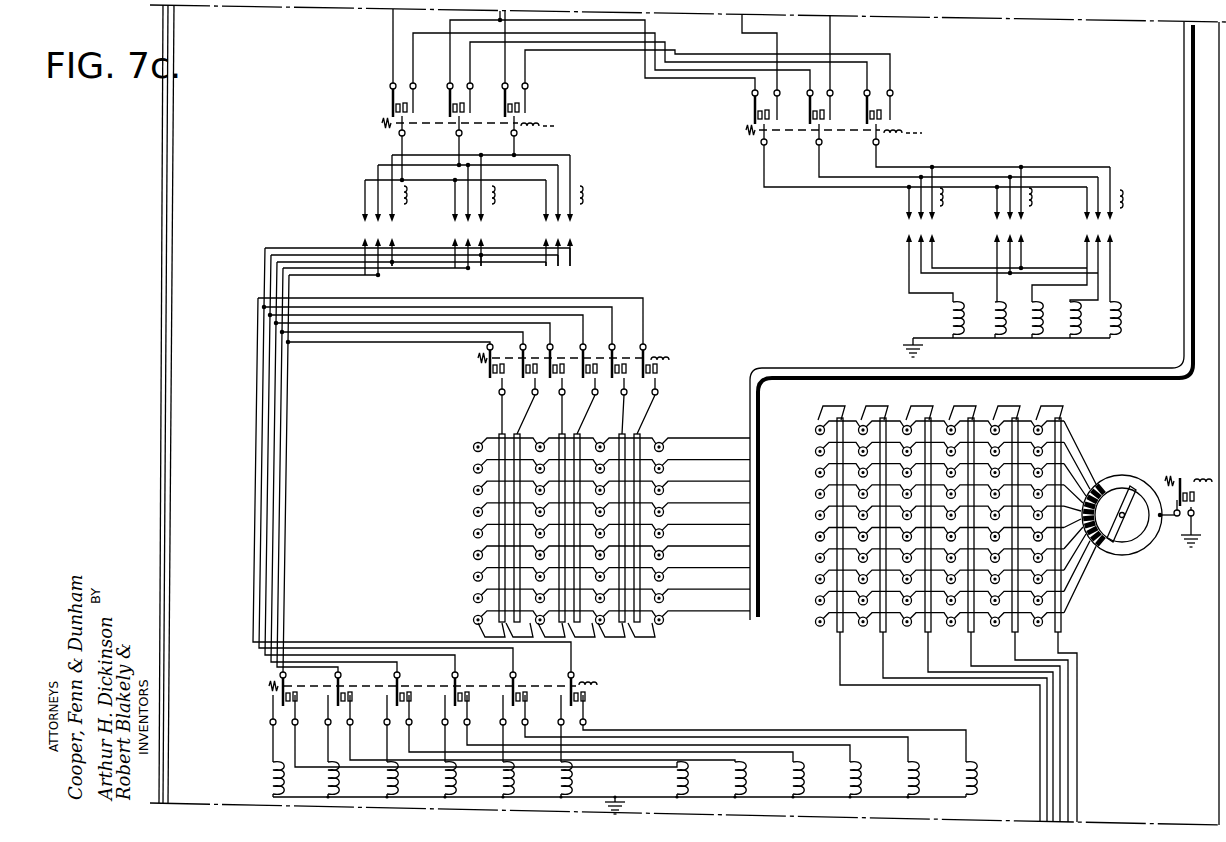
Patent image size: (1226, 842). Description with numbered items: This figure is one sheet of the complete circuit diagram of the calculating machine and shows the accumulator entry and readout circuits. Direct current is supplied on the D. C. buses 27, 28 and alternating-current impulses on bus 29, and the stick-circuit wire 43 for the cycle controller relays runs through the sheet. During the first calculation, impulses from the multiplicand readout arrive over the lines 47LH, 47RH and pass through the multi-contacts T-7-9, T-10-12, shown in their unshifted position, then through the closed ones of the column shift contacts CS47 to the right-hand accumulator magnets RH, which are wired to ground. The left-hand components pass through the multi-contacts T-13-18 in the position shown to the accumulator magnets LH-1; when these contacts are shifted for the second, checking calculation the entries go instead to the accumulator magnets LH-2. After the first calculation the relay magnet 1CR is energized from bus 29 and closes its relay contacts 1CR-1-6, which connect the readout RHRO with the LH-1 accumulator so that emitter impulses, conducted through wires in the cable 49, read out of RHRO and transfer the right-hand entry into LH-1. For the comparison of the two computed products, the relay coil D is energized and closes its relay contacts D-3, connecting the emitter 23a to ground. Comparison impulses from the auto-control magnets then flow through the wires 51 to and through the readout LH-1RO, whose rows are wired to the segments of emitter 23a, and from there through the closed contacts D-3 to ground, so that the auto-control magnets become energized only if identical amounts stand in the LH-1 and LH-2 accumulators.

The D. C. bus 27 is at (162, 540).
The D. C. bus 28 is at (167, 462).
The A. C. bus 29 is at (1219, 109).
The wire 43 is at (160, 332).
The cable 49 is at (790, 376).
The wires 51 is at (1056, 718).
The emitter 23a is at (1138, 497).
The 47LH lines 47LH is at (505, 70).
The 47RH lines 47RH is at (711, 72).
The multi-contacts T-7-9 is at (517, 101).
The multi-contacts T-10-12 is at (878, 111).
The multi-contacts T-13-18 is at (597, 716).
The relay magnet 1CR is at (657, 353).
The relay contacts 1CR-1-6 is at (487, 376).
The RH readout RHRO is at (612, 525).
The LH-1 readout LH-1RO is at (967, 516).
The RH accumulator magnets RH is at (945, 316).
The LH-1 accumulator magnets LH-1 is at (268, 771).
The LH-2 accumulator magnets LH-2 is at (976, 783).
The column shift contacts CS47 is at (493, 206).
The relay coil D is at (1189, 471).
The relay contacts D-3 is at (1162, 522).